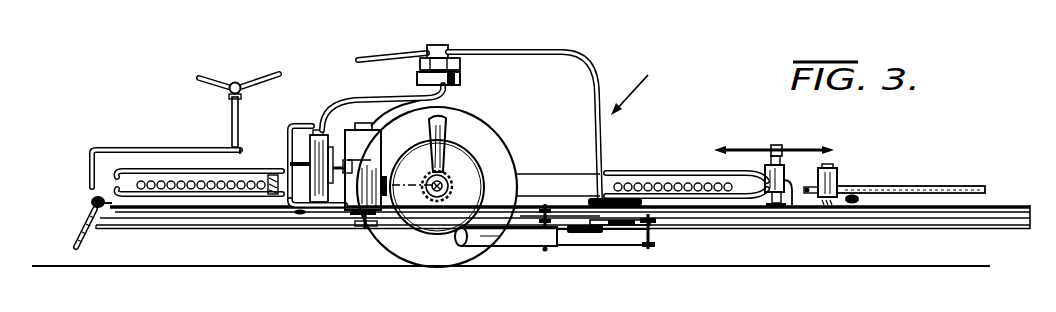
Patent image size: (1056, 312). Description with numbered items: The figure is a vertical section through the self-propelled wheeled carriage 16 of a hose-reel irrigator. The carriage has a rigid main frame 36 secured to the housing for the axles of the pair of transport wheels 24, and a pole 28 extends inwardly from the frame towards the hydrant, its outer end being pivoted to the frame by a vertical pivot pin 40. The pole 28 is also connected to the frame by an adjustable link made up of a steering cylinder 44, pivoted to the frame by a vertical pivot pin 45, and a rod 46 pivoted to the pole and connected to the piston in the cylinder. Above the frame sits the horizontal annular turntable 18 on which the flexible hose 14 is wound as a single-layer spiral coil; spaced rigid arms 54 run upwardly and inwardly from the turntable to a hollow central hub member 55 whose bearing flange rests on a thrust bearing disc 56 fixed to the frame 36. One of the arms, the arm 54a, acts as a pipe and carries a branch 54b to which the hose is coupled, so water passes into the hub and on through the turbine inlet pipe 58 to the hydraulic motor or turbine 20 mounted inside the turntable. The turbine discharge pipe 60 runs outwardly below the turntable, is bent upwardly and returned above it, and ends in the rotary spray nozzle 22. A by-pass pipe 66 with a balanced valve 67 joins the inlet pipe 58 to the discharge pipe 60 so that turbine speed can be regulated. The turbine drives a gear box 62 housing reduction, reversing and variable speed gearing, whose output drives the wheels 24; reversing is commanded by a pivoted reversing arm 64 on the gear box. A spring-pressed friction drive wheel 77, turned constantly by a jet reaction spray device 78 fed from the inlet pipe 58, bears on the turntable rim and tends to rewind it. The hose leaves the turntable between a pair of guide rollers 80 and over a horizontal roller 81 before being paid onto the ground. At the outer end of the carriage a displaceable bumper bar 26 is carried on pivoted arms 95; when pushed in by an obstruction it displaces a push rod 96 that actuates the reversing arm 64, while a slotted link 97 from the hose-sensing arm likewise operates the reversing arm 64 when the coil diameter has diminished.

The flexible hose 14 is at (903, 189).
The self-propelled wheeled carriage 16 is at (639, 83).
The annular turntable 18 is at (596, 187).
The hydraulic motor (turbine) 20 is at (314, 135).
The spray nozzle 22 is at (243, 96).
The transport wheels 24 is at (425, 244).
The bumper bar 26 is at (78, 232).
The pole 28 is at (926, 216).
The main frame 36 is at (330, 210).
The vertical pivot pin 40 is at (600, 233).
The steering cylinder 44 is at (512, 240).
The vertical pivot pin 45 is at (545, 250).
The rod 46 is at (647, 247).
The rigid arms 54 is at (564, 59).
The turntable arm (pipe arm) 54a is at (606, 135).
The branch 54b is at (613, 172).
The hub member 55 is at (441, 45).
The thrust bearing disc 56 is at (462, 80).
The turbine inlet pipe 58 is at (340, 112).
The discharge pipe 60 is at (222, 213).
The gear box 62 is at (363, 172).
The reversing arm 64 is at (366, 226).
The by-pass pipe 66 is at (390, 166).
The balanced valve 67 is at (366, 122).
The friction drive wheel 77 is at (792, 206).
The jet reaction spray device 78 is at (778, 148).
The guide rollers 80 is at (836, 173).
The horizontal roller 81 is at (863, 204).
The pivoted arms 95 is at (90, 202).
The push rod 96 is at (165, 229).
The link 97 is at (580, 235).